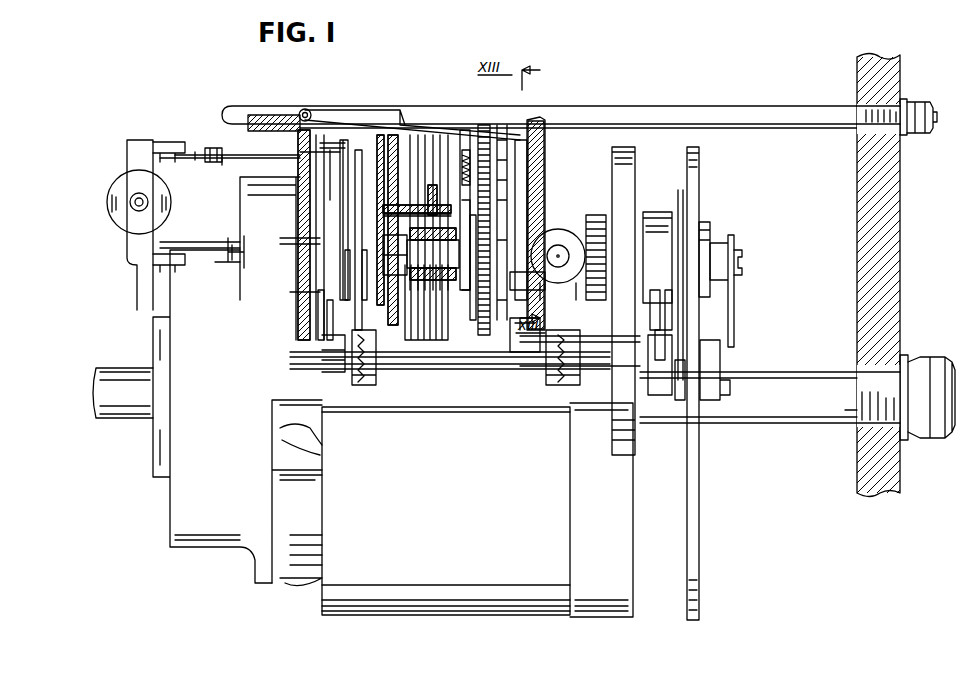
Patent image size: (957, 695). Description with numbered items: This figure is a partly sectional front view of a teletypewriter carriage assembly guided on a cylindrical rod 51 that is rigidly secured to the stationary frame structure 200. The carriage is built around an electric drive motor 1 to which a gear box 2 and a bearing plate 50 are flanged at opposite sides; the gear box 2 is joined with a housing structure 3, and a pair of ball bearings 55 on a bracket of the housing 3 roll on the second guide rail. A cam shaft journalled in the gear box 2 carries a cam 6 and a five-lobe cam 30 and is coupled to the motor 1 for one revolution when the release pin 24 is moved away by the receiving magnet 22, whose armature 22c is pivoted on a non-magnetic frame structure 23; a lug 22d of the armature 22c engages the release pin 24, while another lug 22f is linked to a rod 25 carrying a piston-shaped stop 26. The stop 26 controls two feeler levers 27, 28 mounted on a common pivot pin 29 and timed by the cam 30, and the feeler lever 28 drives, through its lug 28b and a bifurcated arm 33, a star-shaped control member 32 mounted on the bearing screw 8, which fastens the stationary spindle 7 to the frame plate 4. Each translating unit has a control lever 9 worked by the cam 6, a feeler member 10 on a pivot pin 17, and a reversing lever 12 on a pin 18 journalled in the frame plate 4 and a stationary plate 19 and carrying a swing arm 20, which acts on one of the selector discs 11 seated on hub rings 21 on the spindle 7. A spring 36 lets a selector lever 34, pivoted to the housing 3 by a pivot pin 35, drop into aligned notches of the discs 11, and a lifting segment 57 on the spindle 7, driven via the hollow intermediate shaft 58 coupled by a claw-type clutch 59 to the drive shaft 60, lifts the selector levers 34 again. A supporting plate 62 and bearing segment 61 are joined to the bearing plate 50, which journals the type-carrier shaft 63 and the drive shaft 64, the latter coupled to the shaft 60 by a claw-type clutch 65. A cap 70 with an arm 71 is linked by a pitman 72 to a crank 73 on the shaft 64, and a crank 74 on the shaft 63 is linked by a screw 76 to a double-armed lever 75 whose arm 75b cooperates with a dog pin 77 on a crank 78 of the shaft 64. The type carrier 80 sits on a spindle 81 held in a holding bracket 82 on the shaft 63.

The electric drive motor 1 is at (322, 602).
The gear box 2 is at (200, 547).
The housing structure 3 is at (262, 115).
The frame plate 4 is at (430, 135).
The cam 6 is at (350, 280).
The stationary spindle 7 is at (440, 337).
The bearing screw 8 is at (366, 282).
The control lever 9 is at (340, 150).
The feeler member 10 is at (414, 135).
The selector disc 11 is at (465, 130).
The reversing lever 12 is at (446, 135).
The pivot pin 17 is at (381, 135).
The pin 18 is at (433, 254).
The stationary plate 19 is at (470, 310).
The swing arm 20 is at (395, 255).
The hub ring 21 is at (470, 278).
The receiving magnet 22 is at (112, 207).
The armature 22c is at (158, 142).
The lug 22d is at (208, 265).
The lug 22f is at (208, 148).
The frame structure 23 is at (130, 236).
The release pin 24 is at (236, 268).
The rod 25 is at (234, 155).
The stop 26 is at (298, 152).
The feeler lever 27 is at (322, 300).
The feeler lever 28 is at (331, 310).
The lug 28b is at (345, 140).
The pivot pin 29 is at (300, 292).
The five-lobe cam 30 is at (300, 240).
The control member 32 is at (386, 205).
The bifurcated arm 33 is at (358, 150).
The selector lever 34 is at (545, 150).
The pivot pin 35 is at (305, 109).
The spring 36 is at (545, 168).
The bearing plate 50 is at (620, 147).
The guide rod 51 is at (125, 368).
The ball bearing 55 is at (432, 185).
The lifting segment 57 is at (471, 150).
The intermediate shaft 58 is at (408, 370).
The claw-type clutch 59 is at (362, 384).
The drive shaft 60 is at (332, 373).
The bearing segment 61 is at (488, 125).
The supporting plate 62 is at (687, 155).
The type-carrier shaft 63 is at (680, 210).
The drive shaft 64 is at (594, 345).
The claw-type clutch 65 is at (560, 383).
The cap 70 is at (655, 212).
The arm 71 is at (660, 290).
The pitman 72 is at (660, 352).
The crank 73 is at (665, 395).
The crank 74 is at (706, 237).
The double-armed lever 75 is at (735, 288).
The arm 75b is at (735, 346).
The screw 76 is at (742, 258).
The dog pin 77 is at (722, 392).
The crank 78 is at (720, 402).
The type carrier 80 is at (564, 232).
The spindle 81 is at (552, 240).
The holding bracket 82 is at (560, 320).
The frame structure 200 is at (900, 240).